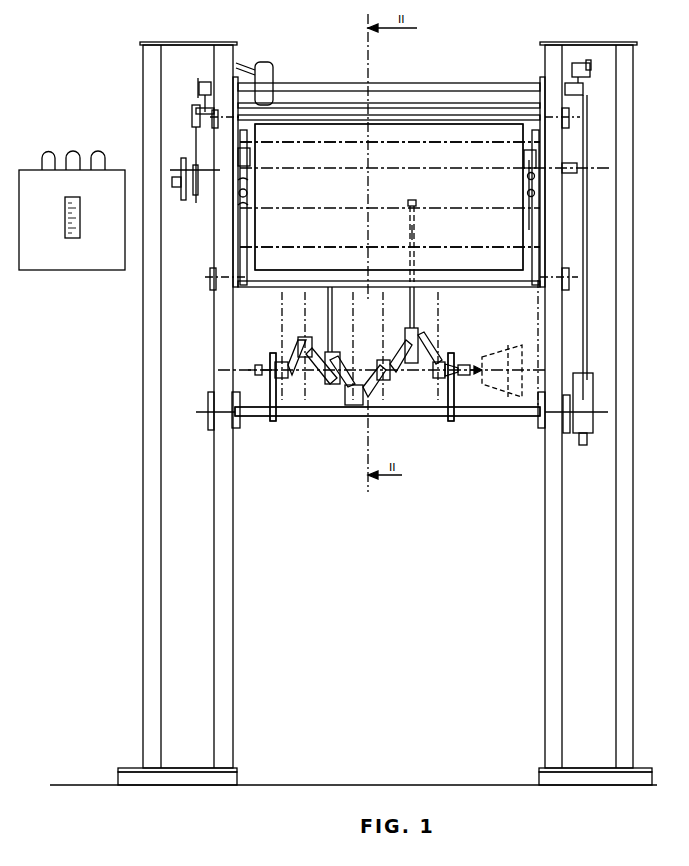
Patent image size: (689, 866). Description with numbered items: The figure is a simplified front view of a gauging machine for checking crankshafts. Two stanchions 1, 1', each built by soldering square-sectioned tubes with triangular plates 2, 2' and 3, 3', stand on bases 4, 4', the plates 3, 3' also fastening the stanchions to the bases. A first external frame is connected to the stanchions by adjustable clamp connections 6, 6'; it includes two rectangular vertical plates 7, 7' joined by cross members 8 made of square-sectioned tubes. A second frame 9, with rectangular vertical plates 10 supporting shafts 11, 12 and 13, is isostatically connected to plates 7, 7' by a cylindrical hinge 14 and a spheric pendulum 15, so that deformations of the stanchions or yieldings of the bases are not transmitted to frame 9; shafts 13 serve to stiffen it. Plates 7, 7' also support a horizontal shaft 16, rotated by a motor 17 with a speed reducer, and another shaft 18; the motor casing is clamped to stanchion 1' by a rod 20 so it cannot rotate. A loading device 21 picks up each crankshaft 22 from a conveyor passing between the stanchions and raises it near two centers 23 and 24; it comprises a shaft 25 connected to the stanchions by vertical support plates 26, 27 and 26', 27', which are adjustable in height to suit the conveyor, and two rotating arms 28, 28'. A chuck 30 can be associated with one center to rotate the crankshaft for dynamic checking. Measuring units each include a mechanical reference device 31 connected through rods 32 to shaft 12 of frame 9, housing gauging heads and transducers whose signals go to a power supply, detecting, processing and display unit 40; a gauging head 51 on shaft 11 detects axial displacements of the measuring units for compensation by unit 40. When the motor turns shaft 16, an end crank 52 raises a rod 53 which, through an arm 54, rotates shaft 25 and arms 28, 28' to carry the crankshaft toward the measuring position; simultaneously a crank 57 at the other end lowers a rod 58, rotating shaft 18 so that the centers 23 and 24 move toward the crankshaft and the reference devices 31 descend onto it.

The stanchion 1 is at (600, 406).
The stanchion 1' is at (177, 406).
The plate 2 is at (588, 31).
The plate 2' is at (188, 30).
The plate 3 is at (599, 758).
The plate 3' is at (173, 756).
The base 4 is at (583, 769).
The base 4' is at (192, 767).
The adjustable clamp connection 6 is at (560, 199).
The adjustable clamp connection 6' is at (217, 206).
The vertical plate 7 is at (533, 167).
The vertical plate 7' is at (251, 162).
The cross member 8 is at (397, 103).
The second frame 9 is at (497, 282).
The vertical plate 10 is at (255, 156).
The shaft 11 is at (390, 227).
The shaft 12 is at (424, 206).
The shaft 13 is at (426, 154).
The cylindrical hinge 14 is at (250, 194).
The spheric pendulum 15 is at (526, 184).
The horizontal shaft 16 is at (315, 84).
The motor 17 is at (273, 68).
The shaft 18 is at (430, 168).
The rod 20 is at (238, 65).
The loading device 21 is at (458, 426).
The crankshaft 22 is at (392, 380).
The center 23 is at (258, 364).
The center 24 is at (465, 364).
The shaft 25 is at (328, 417).
The vertical support plate 26 is at (533, 426).
The vertical support plate 26' is at (248, 425).
The vertical support plate 27 is at (572, 429).
The vertical support plate 27' is at (212, 428).
The rotating arm 28 is at (465, 387).
The rotating arm 28' is at (289, 387).
The chuck 30 is at (488, 352).
The mechanical reference device 31 is at (332, 354).
The rod 32 is at (332, 320).
The power supply, detecting, processing and display unit 40 is at (24, 170).
The gauging head 51 is at (420, 230).
The end crank 52 is at (580, 64).
The rod 53 is at (587, 138).
The arm 54 is at (578, 373).
The crank 57 is at (203, 82).
The rod 58 is at (192, 142).